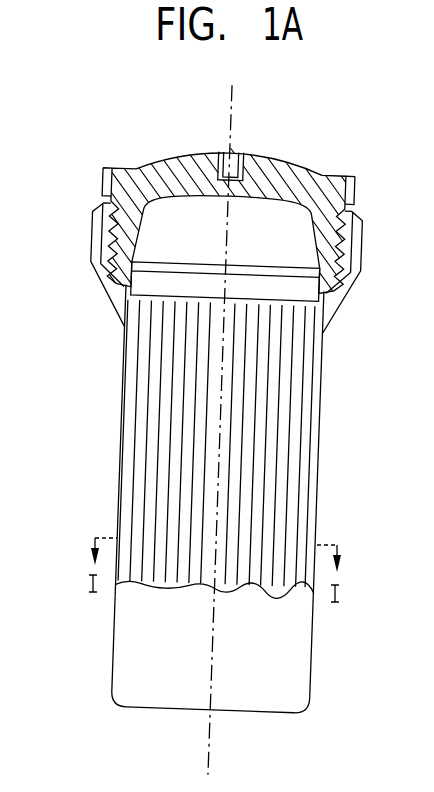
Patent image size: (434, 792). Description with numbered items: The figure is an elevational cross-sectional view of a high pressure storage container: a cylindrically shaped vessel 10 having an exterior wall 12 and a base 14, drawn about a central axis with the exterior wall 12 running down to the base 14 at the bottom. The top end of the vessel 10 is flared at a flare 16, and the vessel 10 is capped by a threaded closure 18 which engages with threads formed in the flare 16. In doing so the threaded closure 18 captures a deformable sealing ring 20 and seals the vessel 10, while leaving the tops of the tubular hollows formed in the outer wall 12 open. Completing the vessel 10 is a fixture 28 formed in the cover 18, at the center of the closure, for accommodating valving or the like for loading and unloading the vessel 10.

The vessel 10 is at (320, 428).
The exterior wall 12 is at (303, 503).
The base 14 is at (208, 707).
The flare 16 is at (130, 280).
The threaded closure 18 is at (311, 186).
The deformable sealing ring 20 is at (108, 238).
The fixture 28 is at (234, 152).